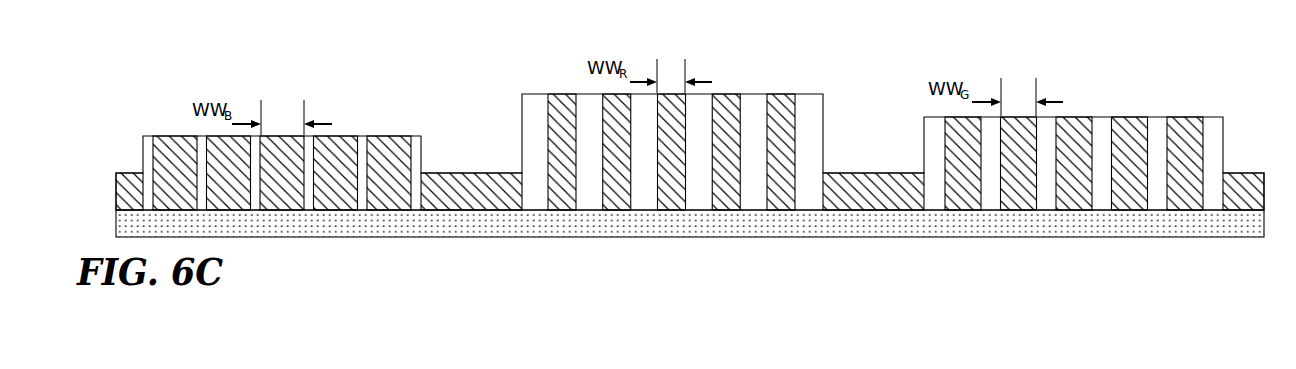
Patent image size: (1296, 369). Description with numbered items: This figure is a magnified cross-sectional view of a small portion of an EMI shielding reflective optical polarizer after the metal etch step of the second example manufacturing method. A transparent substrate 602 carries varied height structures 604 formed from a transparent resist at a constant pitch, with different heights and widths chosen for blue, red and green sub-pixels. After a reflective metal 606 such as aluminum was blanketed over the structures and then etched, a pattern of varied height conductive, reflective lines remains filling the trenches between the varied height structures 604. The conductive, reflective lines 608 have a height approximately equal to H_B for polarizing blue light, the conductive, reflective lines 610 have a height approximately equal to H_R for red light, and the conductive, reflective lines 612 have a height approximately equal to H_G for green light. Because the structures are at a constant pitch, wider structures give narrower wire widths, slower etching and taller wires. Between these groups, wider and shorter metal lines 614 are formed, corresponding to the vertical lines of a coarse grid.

The transparent substrate 602 is at (1140, 237).
The varied height structures 604 is at (1213, 117).
The metal 606 is at (1135, 117).
The conductive, reflective lines for blue light 608 is at (422, 108).
The conductive, reflective lines for red light 610 is at (827, 63).
The conductive, reflective lines for green light 612 is at (1225, 73).
The metal lines 614 is at (520, 152).